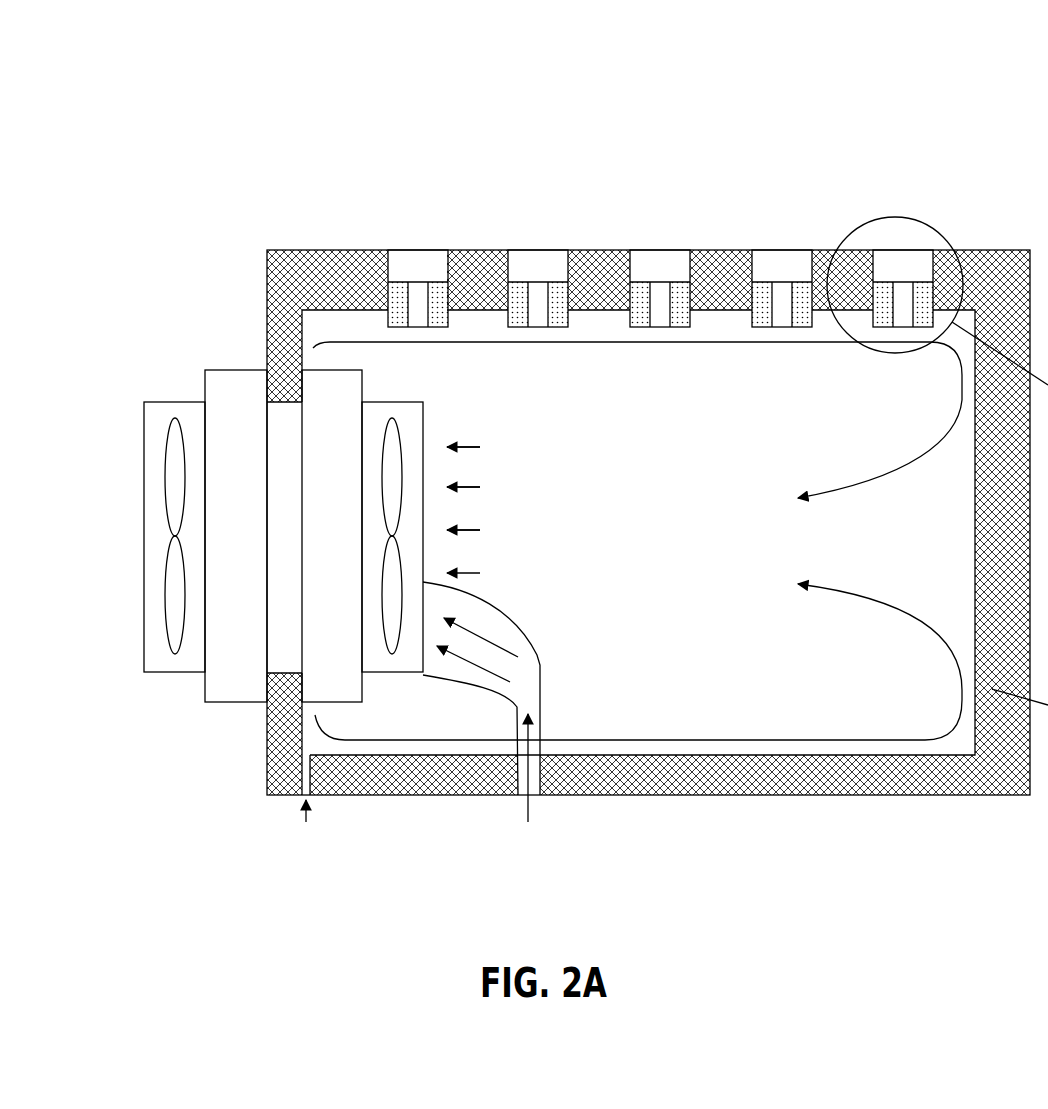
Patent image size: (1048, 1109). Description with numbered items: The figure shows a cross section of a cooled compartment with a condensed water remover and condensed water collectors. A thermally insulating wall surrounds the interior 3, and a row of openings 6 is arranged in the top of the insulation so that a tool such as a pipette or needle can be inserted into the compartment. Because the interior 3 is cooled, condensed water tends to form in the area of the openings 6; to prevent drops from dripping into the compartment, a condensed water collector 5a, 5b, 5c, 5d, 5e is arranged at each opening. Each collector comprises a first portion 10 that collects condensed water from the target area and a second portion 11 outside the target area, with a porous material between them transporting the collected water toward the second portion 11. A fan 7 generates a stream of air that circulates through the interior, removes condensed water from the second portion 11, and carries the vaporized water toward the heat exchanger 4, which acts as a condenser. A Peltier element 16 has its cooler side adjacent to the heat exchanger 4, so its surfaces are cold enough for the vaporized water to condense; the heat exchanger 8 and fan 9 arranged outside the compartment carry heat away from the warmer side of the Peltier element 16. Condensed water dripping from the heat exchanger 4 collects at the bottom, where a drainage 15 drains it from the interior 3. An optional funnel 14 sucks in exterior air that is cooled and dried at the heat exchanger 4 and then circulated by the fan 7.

The interior 3 is at (828, 666).
The heat exchanger 4 is at (330, 690).
The condensed water collector 5a is at (404, 274).
The condensed water collector 5b is at (528, 274).
The condensed water collector 5c is at (645, 274).
The condensed water collector 5d is at (767, 274).
The condensed water collector 5e is at (912, 274).
The opening 6 is at (785, 274).
The fan 7 is at (413, 650).
The heat exchanger 8 is at (230, 402).
The fan 9 is at (167, 470).
The first portion 10 is at (762, 300).
The second portion 11 is at (640, 346).
The funnel 14 is at (527, 677).
The drainage 15 is at (306, 822).
The Peltier element 16 is at (285, 638).